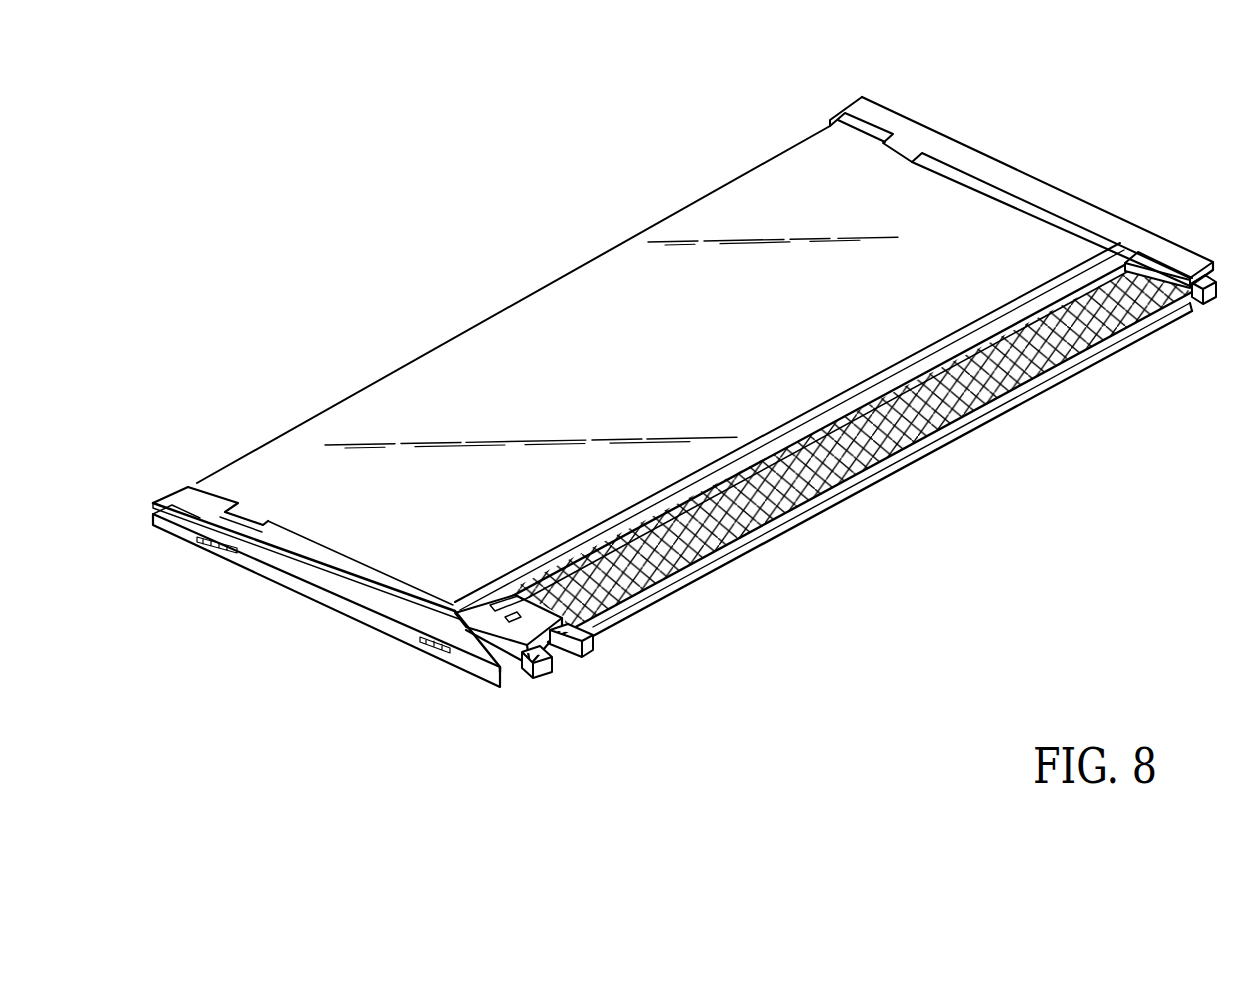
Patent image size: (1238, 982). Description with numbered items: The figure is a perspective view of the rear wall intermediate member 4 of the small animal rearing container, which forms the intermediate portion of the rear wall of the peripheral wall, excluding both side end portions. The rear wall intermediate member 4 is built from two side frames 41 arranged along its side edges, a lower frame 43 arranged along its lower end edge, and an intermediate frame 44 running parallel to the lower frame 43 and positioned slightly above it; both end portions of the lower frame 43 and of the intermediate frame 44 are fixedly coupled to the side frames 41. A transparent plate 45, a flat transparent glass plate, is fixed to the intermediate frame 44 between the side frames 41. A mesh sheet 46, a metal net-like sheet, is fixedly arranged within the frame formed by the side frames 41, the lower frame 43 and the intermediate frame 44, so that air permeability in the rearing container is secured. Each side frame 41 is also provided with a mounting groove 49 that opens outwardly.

The rear wall intermediate member 4 is at (1093, 160).
The side frame 41 is at (995, 168).
The lower frame 43 is at (972, 417).
The intermediate frame 44 is at (825, 410).
The transparent plate 45 is at (559, 325).
The mesh sheet 46 is at (1052, 344).
The mounting groove 49 is at (348, 605).